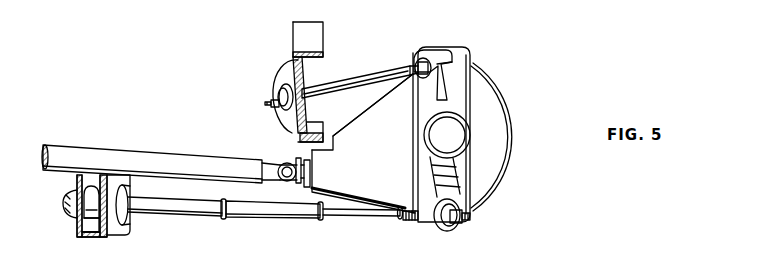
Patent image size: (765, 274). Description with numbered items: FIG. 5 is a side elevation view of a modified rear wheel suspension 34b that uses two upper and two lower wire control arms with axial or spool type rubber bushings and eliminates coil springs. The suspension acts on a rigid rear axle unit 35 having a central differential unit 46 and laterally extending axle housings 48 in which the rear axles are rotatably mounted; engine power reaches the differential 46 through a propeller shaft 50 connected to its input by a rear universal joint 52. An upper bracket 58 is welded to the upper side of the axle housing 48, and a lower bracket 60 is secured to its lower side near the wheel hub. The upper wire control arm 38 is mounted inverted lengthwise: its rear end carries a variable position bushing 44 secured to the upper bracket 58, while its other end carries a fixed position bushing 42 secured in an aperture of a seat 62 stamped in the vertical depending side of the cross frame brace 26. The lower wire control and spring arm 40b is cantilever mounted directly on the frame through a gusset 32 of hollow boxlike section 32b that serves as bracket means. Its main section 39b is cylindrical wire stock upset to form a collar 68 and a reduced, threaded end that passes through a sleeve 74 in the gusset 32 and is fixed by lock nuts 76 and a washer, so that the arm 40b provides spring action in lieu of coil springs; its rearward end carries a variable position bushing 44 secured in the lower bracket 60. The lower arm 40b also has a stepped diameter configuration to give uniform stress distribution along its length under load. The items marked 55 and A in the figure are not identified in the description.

The cross frame brace 26 is at (303, 37).
The gusset-bracket 32 is at (75, 238).
The boxlike gusset section 32b is at (95, 228).
The rear suspension system 34b is at (358, 98).
The rear axle unit 35 is at (511, 168).
The upper wire control arm 38 is at (363, 77).
The main section of lower arm 39b is at (191, 218).
The lower wire control and spring arm 40b is at (300, 225).
The fixed position axial spool type rubber bushing 42 is at (270, 107).
The variable position axial spool type rubber bushing 44 is at (431, 53).
The differential unit 46 is at (384, 188).
The axle housing 48 is at (470, 133).
The propeller shaft 50 is at (88, 155).
The rear universal joint 52 is at (287, 163).
The bolt 55 is at (417, 70).
The upper bracket 58 is at (445, 72).
The lower bracket 60 is at (480, 197).
The seat 62 is at (282, 83).
The collar 68 is at (130, 223).
The sleeve 74 is at (93, 227).
The lock nut 76 is at (70, 207).
The direction A is at (172, 190).